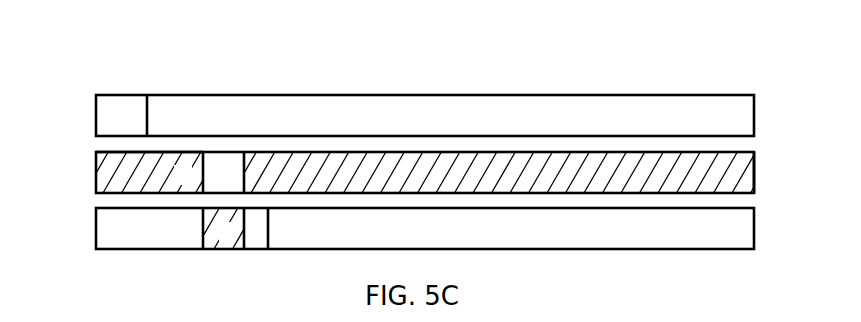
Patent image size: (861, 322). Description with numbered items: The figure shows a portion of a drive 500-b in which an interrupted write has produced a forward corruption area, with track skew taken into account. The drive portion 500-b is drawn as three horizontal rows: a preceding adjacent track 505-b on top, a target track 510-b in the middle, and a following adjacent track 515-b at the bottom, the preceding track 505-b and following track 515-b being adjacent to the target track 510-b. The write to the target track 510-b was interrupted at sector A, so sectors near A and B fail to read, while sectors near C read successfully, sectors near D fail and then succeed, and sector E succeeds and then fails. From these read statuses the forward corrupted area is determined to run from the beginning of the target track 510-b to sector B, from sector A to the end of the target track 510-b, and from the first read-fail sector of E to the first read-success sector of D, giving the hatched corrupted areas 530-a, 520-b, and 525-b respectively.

The portion of a drive 500-b is at (726, 49).
The track N−1 505-b is at (96, 118).
The track N 510-b is at (96, 176).
The track N+1 515-b is at (96, 232).
The forward corrupted area 520-b is at (755, 160).
The forward corrupted area 525-b is at (212, 250).
The forward corrupted area 530-a is at (96, 152).